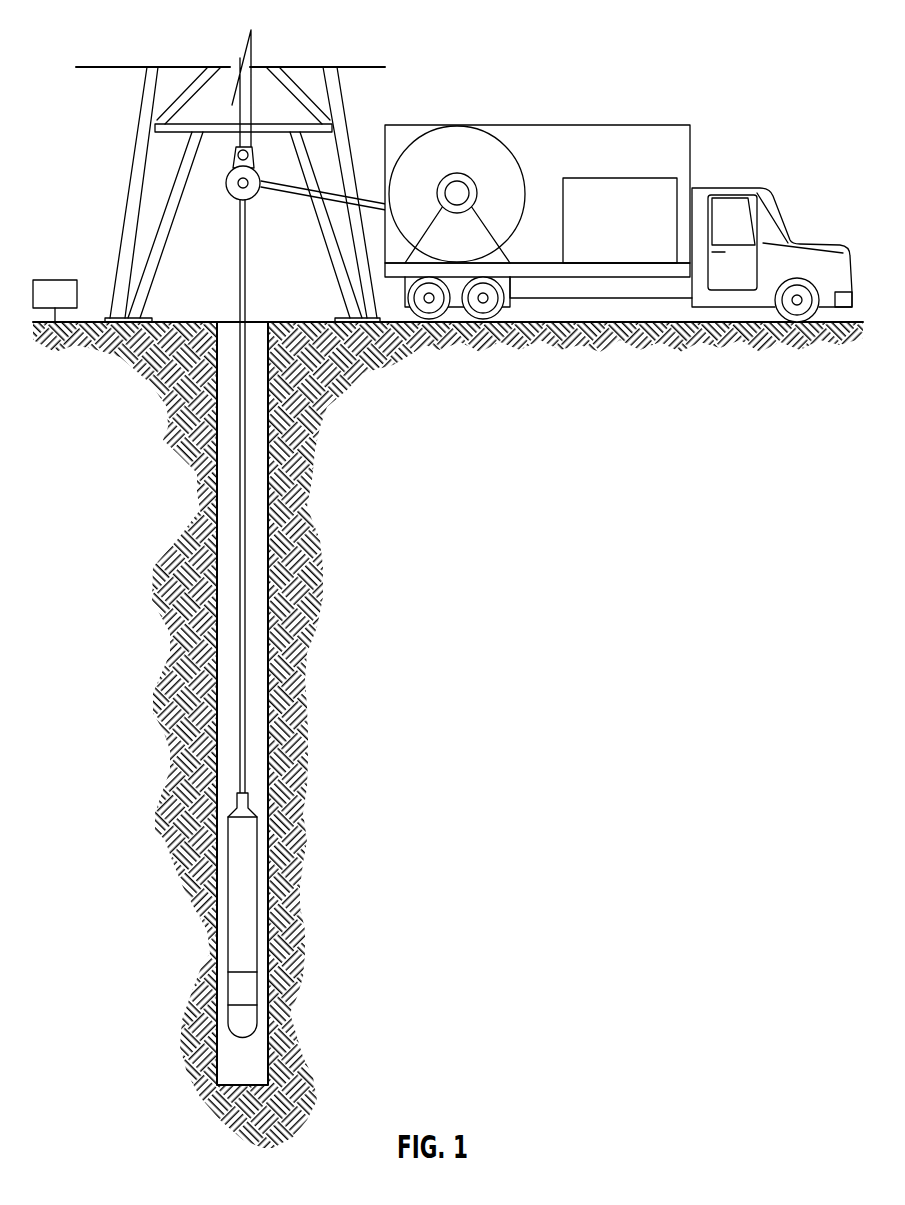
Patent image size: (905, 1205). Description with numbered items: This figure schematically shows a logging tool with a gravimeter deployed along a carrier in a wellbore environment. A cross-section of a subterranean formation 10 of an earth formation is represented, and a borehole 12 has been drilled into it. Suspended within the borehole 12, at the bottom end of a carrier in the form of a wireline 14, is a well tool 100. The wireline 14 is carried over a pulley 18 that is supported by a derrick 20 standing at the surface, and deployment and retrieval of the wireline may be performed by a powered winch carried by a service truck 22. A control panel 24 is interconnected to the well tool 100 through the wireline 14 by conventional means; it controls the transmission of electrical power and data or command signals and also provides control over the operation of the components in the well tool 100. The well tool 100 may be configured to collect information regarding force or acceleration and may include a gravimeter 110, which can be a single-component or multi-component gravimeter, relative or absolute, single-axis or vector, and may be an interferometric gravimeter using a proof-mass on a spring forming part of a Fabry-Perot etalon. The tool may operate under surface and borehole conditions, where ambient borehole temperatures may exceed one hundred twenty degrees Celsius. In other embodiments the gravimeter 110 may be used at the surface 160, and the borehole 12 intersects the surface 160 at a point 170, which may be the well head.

The subterranean formation 10 is at (310, 593).
The borehole 12 is at (210, 500).
The wireline 14 is at (246, 517).
The pulley 18 is at (226, 184).
The derrick 20 is at (136, 135).
The service truck 22 is at (562, 124).
The control panel 24 is at (620, 178).
The well tool 100 is at (228, 942).
The gravimeter 110 is at (245, 988).
The surface 160 is at (82, 325).
The point 170 is at (40, 280).